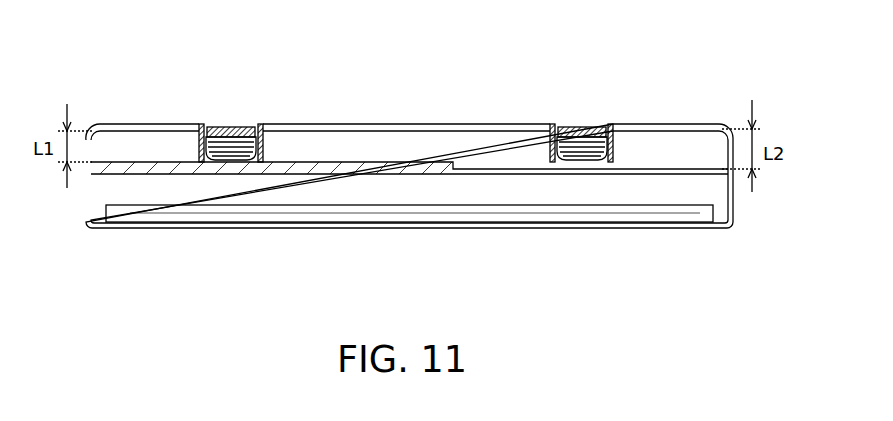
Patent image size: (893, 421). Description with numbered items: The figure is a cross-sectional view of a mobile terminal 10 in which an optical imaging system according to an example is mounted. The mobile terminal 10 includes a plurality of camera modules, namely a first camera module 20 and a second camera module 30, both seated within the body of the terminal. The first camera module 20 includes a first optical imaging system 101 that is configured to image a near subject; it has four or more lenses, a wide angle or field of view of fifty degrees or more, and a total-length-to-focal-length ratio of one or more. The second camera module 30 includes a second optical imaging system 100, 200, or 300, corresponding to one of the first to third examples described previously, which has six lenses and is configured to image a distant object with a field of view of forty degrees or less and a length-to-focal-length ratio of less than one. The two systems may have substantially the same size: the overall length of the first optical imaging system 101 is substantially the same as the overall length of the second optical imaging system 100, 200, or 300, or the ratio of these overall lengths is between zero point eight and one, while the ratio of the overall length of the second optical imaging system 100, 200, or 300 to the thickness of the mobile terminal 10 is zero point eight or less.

The mobile terminal 10 is at (678, 124).
The first camera module 20 is at (213, 162).
The second camera module 30 is at (565, 163).
The second optical imaging system 100 is at (554, 171).
The second optical imaging system 200 is at (554, 171).
The second optical imaging system 300 is at (554, 171).
The first optical imaging system 101 is at (233, 124).